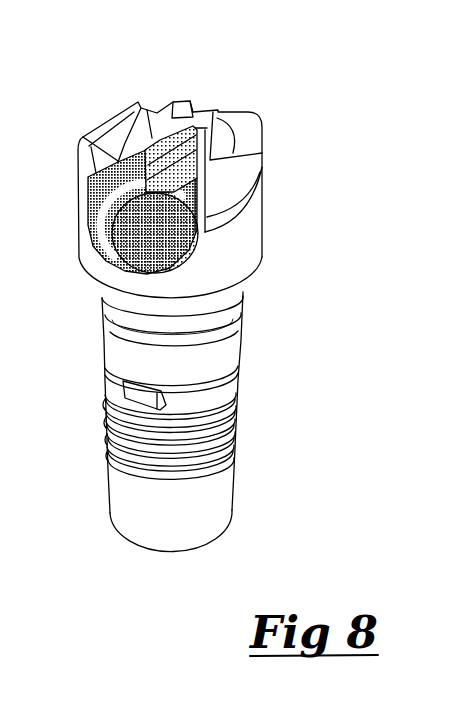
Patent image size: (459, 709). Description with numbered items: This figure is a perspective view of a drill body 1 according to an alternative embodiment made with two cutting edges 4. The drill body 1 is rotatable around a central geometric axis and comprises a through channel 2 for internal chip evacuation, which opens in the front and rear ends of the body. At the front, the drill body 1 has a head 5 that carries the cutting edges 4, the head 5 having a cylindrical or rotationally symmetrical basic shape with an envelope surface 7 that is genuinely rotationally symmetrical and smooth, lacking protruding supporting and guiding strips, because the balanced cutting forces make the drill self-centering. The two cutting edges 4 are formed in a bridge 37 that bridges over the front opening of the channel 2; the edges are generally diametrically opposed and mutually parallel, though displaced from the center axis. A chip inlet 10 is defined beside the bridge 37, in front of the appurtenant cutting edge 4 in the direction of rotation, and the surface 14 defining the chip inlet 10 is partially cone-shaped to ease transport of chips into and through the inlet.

The drill body 1 is at (272, 302).
The through channel 2 is at (100, 256).
The cutting edge 4 is at (83, 138).
The front head 5 is at (277, 198).
The envelope surface 7 is at (246, 243).
The chip inlet 10 is at (170, 266).
The surface 14 is at (95, 222).
The bridge 37 is at (158, 148).